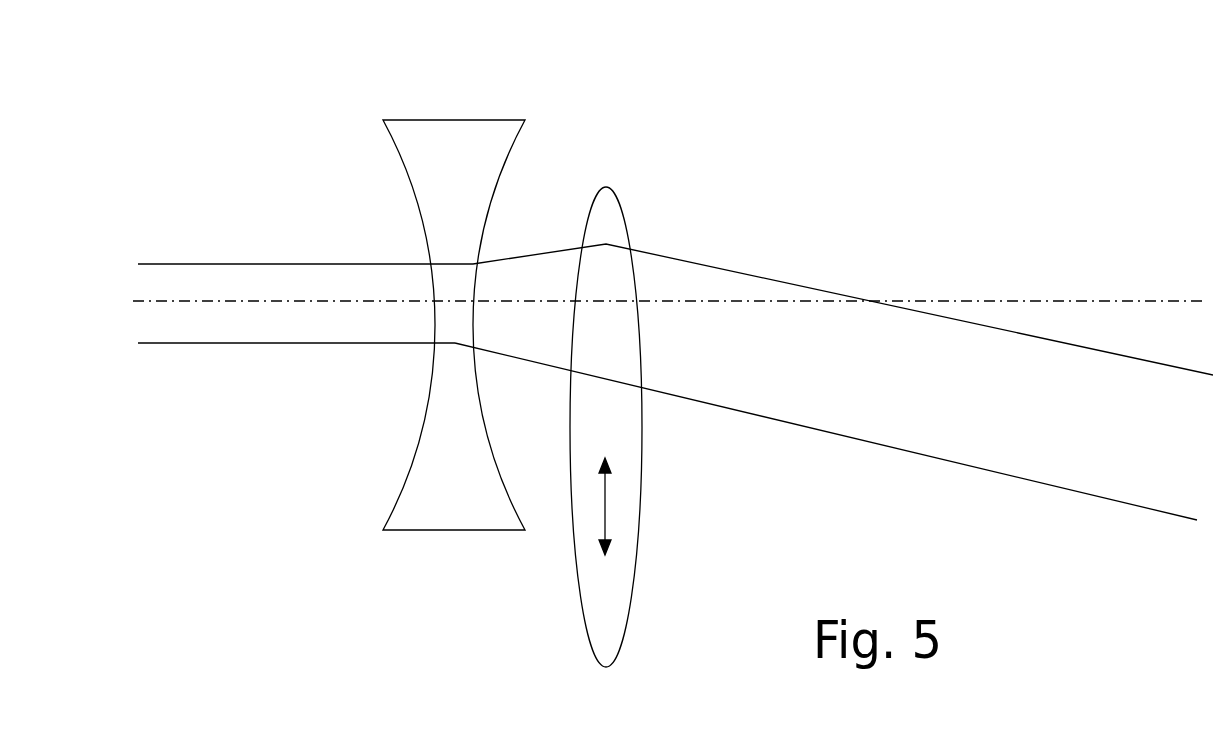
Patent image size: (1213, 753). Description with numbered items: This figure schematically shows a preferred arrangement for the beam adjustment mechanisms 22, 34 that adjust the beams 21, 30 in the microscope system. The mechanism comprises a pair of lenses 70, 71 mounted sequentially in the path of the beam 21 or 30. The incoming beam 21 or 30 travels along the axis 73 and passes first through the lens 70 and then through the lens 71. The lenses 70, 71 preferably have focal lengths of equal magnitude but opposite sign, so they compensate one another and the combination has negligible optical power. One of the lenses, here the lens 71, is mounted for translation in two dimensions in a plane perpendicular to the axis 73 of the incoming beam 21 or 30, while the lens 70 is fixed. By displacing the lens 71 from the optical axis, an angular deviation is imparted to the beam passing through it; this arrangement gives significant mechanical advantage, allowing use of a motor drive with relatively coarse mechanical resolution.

The beam 21 is at (305, 279).
The beam 30 is at (328, 263).
The beam adjustment mechanism 22 is at (673, 349).
The beam adjustment mechanism 34 is at (673, 349).
The lens 70 is at (472, 120).
The lens 71 is at (622, 210).
The axis 73 is at (1015, 300).